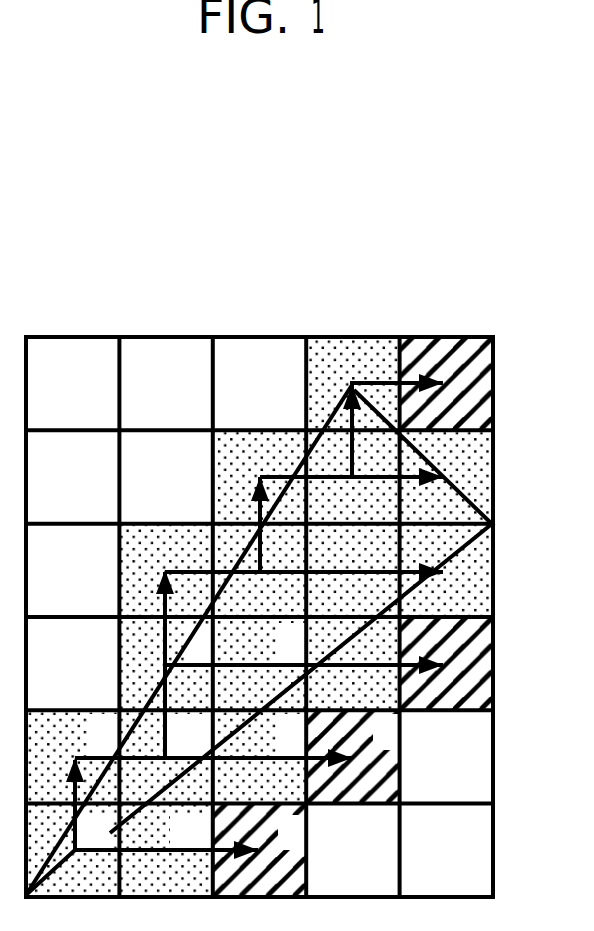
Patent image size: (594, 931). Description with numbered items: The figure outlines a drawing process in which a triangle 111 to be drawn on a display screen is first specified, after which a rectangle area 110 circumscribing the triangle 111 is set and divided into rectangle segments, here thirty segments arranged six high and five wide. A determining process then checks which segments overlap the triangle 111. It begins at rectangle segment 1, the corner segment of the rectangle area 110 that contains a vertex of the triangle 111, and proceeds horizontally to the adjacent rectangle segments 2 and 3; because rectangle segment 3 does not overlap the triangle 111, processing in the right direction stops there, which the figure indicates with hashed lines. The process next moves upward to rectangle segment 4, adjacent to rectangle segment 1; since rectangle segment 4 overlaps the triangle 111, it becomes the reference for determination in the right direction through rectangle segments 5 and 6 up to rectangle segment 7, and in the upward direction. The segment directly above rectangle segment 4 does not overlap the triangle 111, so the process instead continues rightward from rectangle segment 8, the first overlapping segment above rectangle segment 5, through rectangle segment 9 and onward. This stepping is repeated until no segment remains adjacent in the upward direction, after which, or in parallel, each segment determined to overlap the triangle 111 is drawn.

The rectangle area 110 is at (425, 200).
The triangle 111 is at (467, 493).
The rectangle segment 1 is at (72, 850).
The rectangle segment 2 is at (165, 850).
The rectangle segment 3 is at (259, 850).
The rectangle segment 4 is at (72, 756).
The rectangle segment 5 is at (165, 756).
The rectangle segment 6 is at (259, 756).
The rectangle segment 7 is at (352, 756).
The rectangle segment 8 is at (165, 663).
The rectangle segment 9 is at (260, 663).